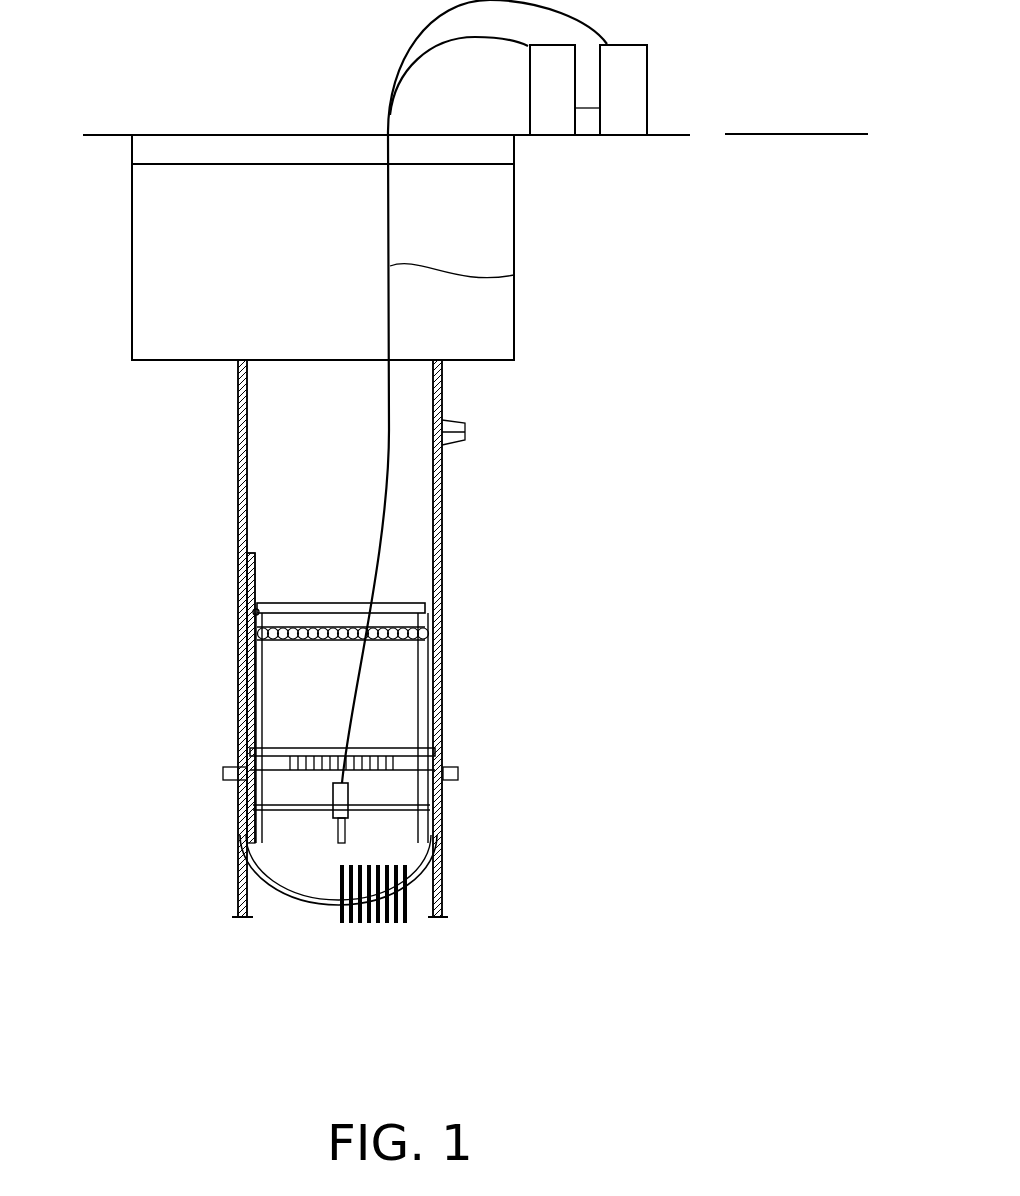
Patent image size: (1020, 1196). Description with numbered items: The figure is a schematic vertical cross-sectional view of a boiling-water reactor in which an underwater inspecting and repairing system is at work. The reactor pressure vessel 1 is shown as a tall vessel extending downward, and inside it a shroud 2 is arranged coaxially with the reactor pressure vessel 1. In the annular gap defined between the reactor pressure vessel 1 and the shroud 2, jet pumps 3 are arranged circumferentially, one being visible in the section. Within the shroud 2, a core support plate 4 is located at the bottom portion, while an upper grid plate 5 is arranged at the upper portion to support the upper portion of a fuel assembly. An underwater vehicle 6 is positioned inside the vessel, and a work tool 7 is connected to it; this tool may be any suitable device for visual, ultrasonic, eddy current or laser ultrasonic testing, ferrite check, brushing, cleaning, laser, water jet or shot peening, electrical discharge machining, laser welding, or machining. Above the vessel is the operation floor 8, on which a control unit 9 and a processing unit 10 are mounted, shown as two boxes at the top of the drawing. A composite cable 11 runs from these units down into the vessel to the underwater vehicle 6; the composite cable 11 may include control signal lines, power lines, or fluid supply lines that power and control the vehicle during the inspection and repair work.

The reactor pressure vessel 1 is at (468, 502).
The shroud 2 is at (410, 688).
The jet pumps 3 is at (240, 747).
The core support plate 4 is at (443, 735).
The upper grid plate 5 is at (440, 620).
The underwater vehicle 6 is at (442, 800).
The work tool 7 is at (240, 832).
The operation floor 8 is at (105, 133).
The control unit 9 is at (550, 123).
The processing unit 10 is at (633, 70).
The composite cable 11 is at (514, 275).